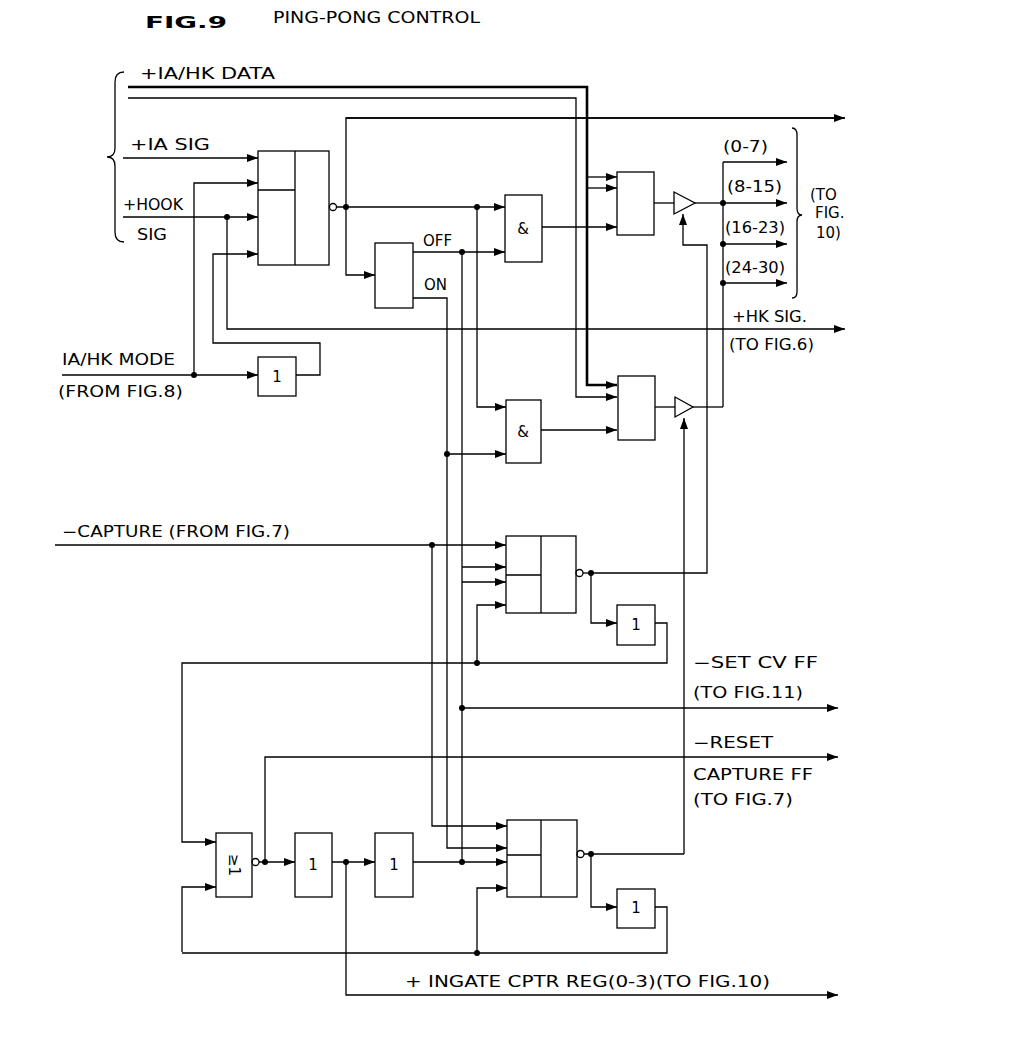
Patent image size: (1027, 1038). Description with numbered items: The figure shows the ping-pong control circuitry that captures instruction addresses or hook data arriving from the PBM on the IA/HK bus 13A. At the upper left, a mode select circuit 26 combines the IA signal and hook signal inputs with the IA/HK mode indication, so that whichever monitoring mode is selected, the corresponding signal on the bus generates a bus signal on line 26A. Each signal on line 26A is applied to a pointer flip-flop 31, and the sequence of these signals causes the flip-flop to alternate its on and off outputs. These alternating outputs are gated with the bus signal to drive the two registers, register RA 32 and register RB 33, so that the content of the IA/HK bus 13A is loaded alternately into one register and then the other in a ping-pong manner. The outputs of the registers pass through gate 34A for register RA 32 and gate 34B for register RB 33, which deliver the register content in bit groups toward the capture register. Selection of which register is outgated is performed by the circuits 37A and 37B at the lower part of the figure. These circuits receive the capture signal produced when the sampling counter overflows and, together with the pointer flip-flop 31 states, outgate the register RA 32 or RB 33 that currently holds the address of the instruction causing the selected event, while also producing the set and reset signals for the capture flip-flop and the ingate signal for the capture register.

The IA/HK bus 13A is at (89, 157).
The mode select circuit 26 is at (283, 270).
The bus signal line 26A is at (477, 120).
The pointer flip-flop 31 is at (385, 243).
The register RA 32 is at (635, 237).
The register RB 33 is at (638, 376).
The gate for register RA 34A is at (698, 163).
The gate for register RB 34B is at (685, 398).
The outgate circuit 37A is at (522, 536).
The outgate circuit 37B is at (522, 820).